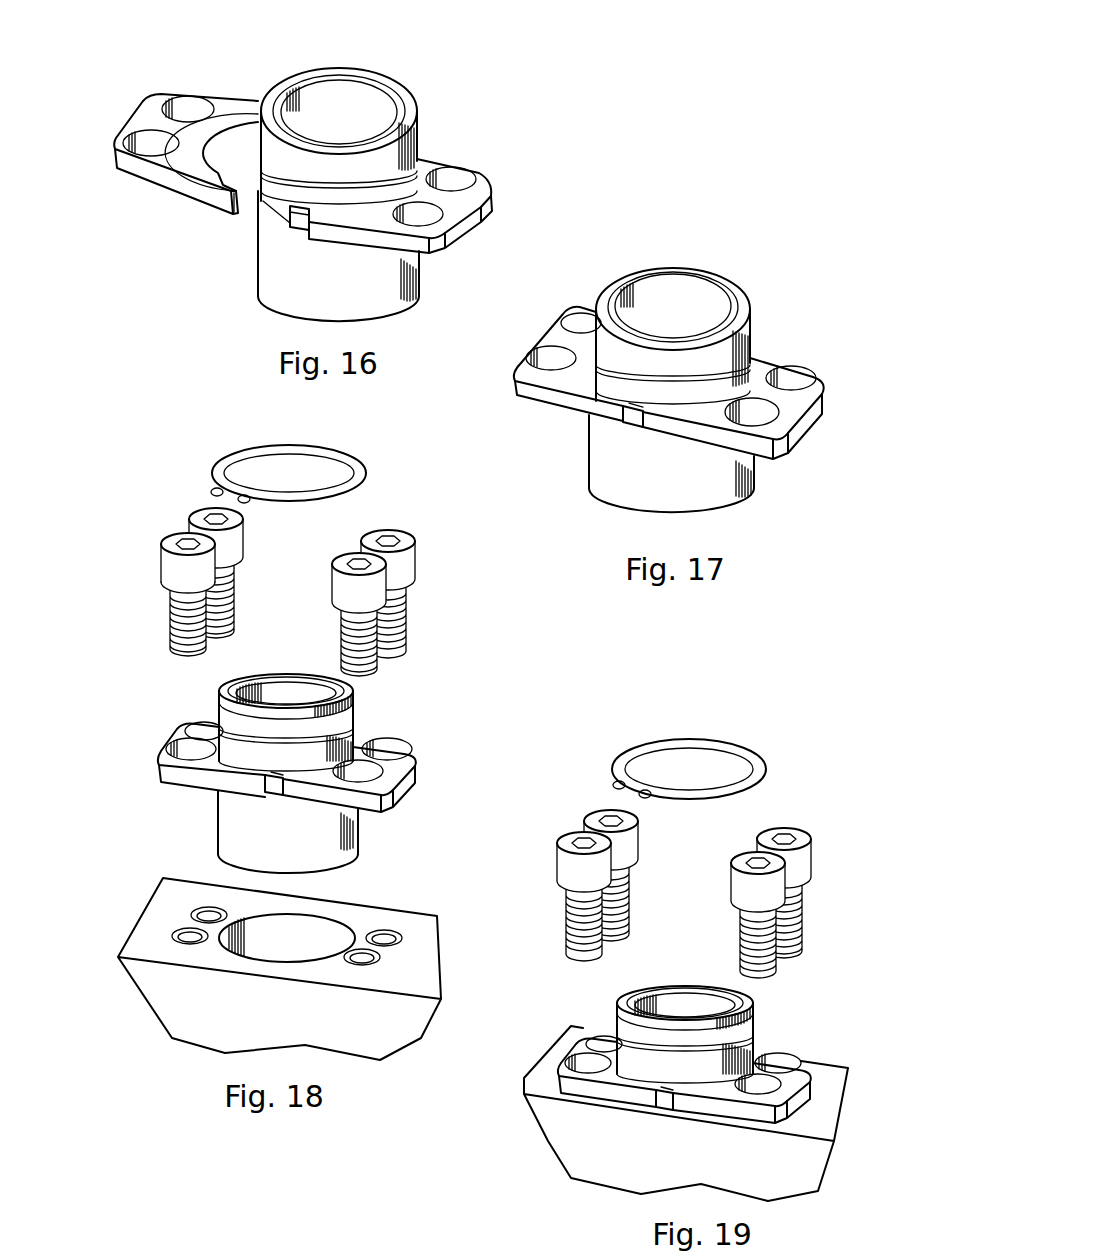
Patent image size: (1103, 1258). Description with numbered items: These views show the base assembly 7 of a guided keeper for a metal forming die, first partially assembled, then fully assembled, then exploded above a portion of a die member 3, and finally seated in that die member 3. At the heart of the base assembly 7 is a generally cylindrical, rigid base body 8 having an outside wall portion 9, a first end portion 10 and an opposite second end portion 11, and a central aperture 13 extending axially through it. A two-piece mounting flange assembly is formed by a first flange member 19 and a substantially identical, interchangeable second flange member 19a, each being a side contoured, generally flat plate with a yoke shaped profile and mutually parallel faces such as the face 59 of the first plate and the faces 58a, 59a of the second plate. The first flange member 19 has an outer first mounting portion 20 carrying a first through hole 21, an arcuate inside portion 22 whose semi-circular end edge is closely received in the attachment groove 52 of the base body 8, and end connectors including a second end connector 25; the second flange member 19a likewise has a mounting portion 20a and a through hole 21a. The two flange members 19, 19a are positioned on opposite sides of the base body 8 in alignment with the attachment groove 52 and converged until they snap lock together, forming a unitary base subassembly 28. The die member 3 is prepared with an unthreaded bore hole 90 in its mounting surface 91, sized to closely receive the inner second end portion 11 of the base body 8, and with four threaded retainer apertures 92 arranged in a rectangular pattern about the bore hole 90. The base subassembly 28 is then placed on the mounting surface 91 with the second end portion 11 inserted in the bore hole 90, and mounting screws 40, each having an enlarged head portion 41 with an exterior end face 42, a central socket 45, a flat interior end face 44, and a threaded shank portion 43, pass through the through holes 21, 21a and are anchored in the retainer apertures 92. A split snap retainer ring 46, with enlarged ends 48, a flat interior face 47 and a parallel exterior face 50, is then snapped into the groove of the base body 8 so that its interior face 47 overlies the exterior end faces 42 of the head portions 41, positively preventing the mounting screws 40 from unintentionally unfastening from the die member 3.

In FIG. 18, the first die member 3 is at (114, 958).
In FIG. 19, the first die member 3 is at (686, 1113).
In FIG. 16, the base assembly 7 is at (274, 58).
In FIG. 17, the base assembly 7 is at (762, 260).
In FIG. 18, the base assembly 7 is at (160, 413).
In FIG. 19, the base assembly 7 is at (802, 758).
In FIG. 16, the base body 8 is at (417, 94).
In FIG. 17, the base body 8 is at (634, 266).
In FIG. 18, the base body 8 is at (283, 666).
In FIG. 19, the base body 8 is at (758, 1018).
In FIG. 16, the outside wall portion 9 is at (272, 292).
In FIG. 17, the outside wall portion 9 is at (610, 484).
In FIG. 18, the outside wall portion 9 is at (232, 827).
In FIG. 16, the first end portion 10 is at (377, 76).
In FIG. 17, the first end portion 10 is at (748, 303).
In FIG. 16, the second end portion 11 is at (396, 301).
In FIG. 17, the second end portion 11 is at (730, 508).
In FIG. 18, the second end portion 11 is at (217, 863).
In FIG. 16, the central aperture 13 is at (333, 88).
In FIG. 17, the central aperture 13 is at (672, 290).
In FIG. 16, the first flange member 19 is at (152, 84).
In FIG. 17, the first flange member 19 is at (570, 300).
In FIG. 18, the first flange member 19 is at (185, 717).
In FIG. 19, the first flange member 19 is at (570, 1042).
In FIG. 16, the second flange member 19a is at (486, 164).
In FIG. 17, the second flange member 19a is at (825, 372).
In FIG. 18, the second flange member 19a is at (426, 746).
In FIG. 19, the second flange member 19a is at (815, 1073).
In FIG. 16, the first mounting portion 20 is at (142, 114).
In FIG. 17, the first mounting portion 20 is at (546, 334).
In FIG. 16, the mounting portion 20a is at (456, 206).
In FIG. 17, the mounting portion 20a is at (795, 405).
In FIG. 16, the first through hole 21 is at (188, 100).
In FIG. 17, the first through hole 21 is at (512, 347).
In FIG. 18, the first through hole 21 is at (189, 748).
In FIG. 19, the first through hole 21 is at (606, 1029).
In FIG. 17, the through hole 21a is at (790, 370).
In FIG. 18, the through hole 21a is at (388, 748).
In FIG. 19, the through hole 21a is at (788, 1060).
In FIG. 16, the arcuate inside portion 22 is at (223, 100).
In FIG. 16, the second end connector 25 is at (224, 204).
In FIG. 17, the second end connector 25 is at (623, 422).
In FIG. 18, the second end connector 25 is at (257, 788).
In FIG. 19, the second end connector 25 is at (660, 1093).
In FIG. 17, the base subassembly 28 is at (797, 312).
In FIG. 18, the base subassembly 28 is at (388, 697).
In FIG. 19, the base subassembly 28 is at (694, 1086).
In FIG. 18, the mounting screws 40 is at (178, 517).
In FIG. 19, the mounting screws 40 is at (586, 805).
In FIG. 18, the enlarged head portions 41 is at (170, 567).
In FIG. 19, the enlarged head portions 41 is at (560, 858).
In FIG. 18, the exterior end faces 42 is at (371, 531).
In FIG. 19, the exterior end faces 42 is at (565, 833).
In FIG. 18, the threaded shank portions 43 is at (172, 633).
In FIG. 19, the threaded shank portions 43 is at (570, 927).
In FIG. 18, the interior end faces 44 is at (170, 582).
In FIG. 18, the central socket 45 is at (392, 537).
In FIG. 19, the central socket 45 is at (788, 833).
In FIG. 18, the retainer ring 46 is at (357, 452).
In FIG. 19, the retainer ring 46 is at (710, 737).
In FIG. 18, the interior face 47 is at (354, 496).
In FIG. 19, the interior face 47 is at (728, 798).
In FIG. 18, the enlarged ends 48 is at (213, 490).
In FIG. 19, the enlarged ends 48 is at (612, 783).
In FIG. 18, the exterior face 50 is at (257, 445).
In FIG. 19, the exterior face 50 is at (740, 755).
In FIG. 16, the attachment groove 52 is at (282, 206).
In FIG. 17, the first face 58a is at (778, 448).
In FIG. 16, the second face 59 is at (140, 182).
In FIG. 17, the second face 59 is at (537, 402).
In FIG. 18, the second face 59 is at (171, 782).
In FIG. 16, the second face 59a is at (426, 154).
In FIG. 18, the second face 59a is at (393, 766).
In FIG. 18, the bore hole 90 is at (332, 926).
In FIG. 18, the mounting surface 91 is at (426, 973).
In FIG. 18, the threaded retainer apertures 92 is at (203, 911).